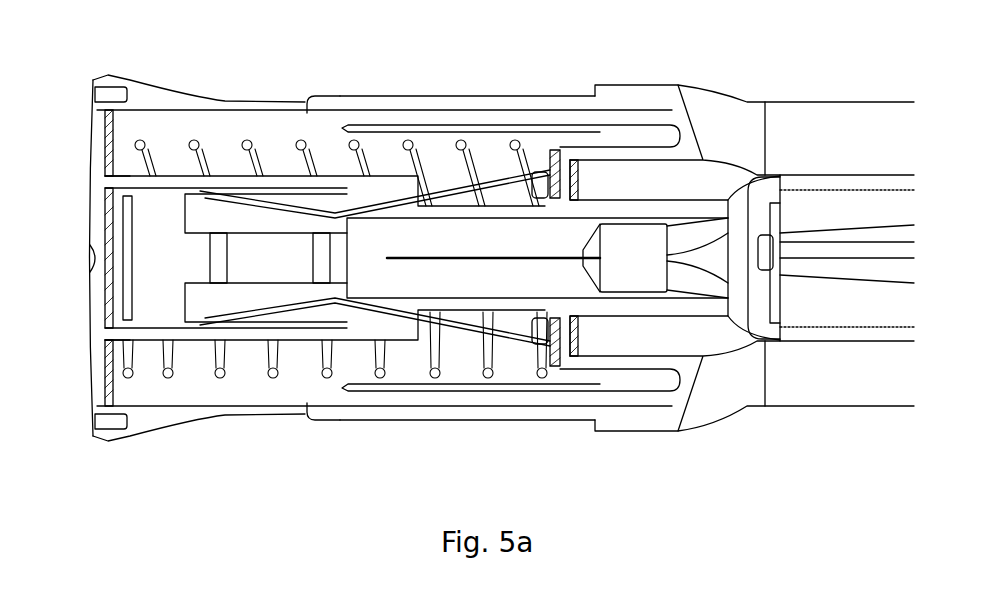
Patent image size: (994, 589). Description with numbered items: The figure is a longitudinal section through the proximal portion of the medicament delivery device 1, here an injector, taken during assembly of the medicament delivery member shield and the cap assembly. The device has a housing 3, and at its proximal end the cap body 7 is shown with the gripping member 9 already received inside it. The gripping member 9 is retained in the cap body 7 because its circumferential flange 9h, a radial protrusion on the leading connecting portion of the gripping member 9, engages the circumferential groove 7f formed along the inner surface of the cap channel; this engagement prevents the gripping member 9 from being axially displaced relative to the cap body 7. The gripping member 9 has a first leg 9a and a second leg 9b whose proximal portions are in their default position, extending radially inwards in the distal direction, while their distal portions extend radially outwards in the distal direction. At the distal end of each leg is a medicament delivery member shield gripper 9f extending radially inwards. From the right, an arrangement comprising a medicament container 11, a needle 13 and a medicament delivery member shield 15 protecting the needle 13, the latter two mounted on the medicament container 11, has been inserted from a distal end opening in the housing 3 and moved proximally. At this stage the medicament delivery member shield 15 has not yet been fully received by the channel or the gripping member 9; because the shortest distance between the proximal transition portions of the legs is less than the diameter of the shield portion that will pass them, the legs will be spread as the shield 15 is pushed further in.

The medicament delivery device 1 is at (521, 42).
The housing 3 is at (463, 95).
The cap body 7 is at (197, 96).
The circumferential groove 7f is at (117, 177).
The gripping member 9 is at (165, 300).
The first leg 9a is at (302, 205).
The second leg 9b is at (294, 318).
The medicament delivery member shield gripper 9f is at (545, 182).
The circumferential flange 9h is at (113, 217).
The medicament container 11 is at (835, 175).
The needle 13 is at (497, 262).
The medicament delivery member shield 15 is at (652, 320).